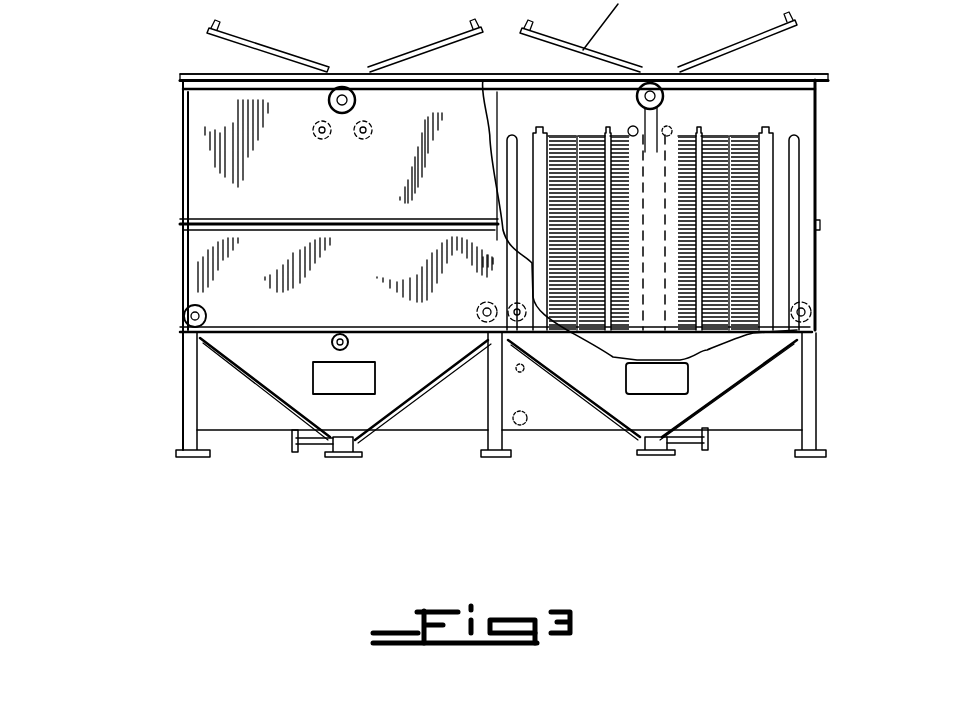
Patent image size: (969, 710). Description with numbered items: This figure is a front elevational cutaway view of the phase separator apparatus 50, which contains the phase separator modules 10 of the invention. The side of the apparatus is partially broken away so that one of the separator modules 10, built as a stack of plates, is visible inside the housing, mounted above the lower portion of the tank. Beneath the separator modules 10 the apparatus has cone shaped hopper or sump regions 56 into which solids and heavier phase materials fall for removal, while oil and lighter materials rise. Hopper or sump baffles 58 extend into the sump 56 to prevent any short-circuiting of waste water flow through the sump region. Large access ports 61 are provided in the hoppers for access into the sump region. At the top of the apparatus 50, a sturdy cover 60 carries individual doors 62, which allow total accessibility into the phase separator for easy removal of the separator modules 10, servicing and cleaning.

The phase separator module 10 is at (585, 148).
The phase separator apparatus 50 is at (135, 130).
The cone shaped hopper or sump region 56 is at (395, 400).
The hopper or sump baffle 58 is at (598, 378).
The cover 60 is at (838, 15).
The access port 61 is at (340, 382).
The door 62 is at (253, 56).